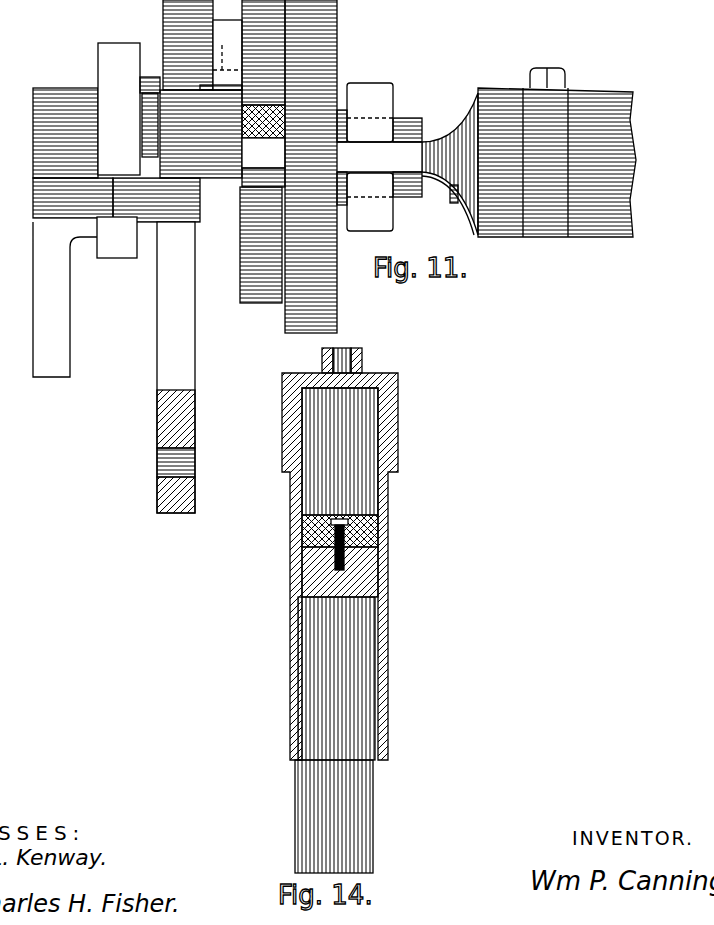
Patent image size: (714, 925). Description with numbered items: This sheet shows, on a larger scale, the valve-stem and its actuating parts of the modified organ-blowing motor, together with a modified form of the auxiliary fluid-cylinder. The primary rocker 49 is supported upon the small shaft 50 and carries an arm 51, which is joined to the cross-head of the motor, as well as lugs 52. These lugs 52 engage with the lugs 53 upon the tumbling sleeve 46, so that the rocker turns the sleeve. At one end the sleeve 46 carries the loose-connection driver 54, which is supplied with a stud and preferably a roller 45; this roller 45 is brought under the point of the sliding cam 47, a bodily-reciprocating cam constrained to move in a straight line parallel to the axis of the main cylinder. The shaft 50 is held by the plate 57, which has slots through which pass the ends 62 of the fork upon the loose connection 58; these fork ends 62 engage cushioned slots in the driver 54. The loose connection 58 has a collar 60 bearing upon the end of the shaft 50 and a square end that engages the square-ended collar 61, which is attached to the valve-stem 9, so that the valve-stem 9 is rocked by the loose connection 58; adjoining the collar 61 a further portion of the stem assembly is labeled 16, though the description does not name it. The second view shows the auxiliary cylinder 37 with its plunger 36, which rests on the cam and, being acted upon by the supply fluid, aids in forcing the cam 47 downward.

In FIG. 11, the valve-stem 9 is at (452, 200).
In FIG. 11, the cylinder 16 is at (598, 237).
In FIG. 14, the plunger 36 is at (373, 791).
In FIG. 14, the cylinder 37 is at (385, 573).
In FIG. 11, the roller 45 is at (188, 28).
In FIG. 11, the tumbling sleeve 46 is at (232, 212).
In FIG. 11, the sliding cam 47 is at (196, 410).
In FIG. 11, the primary rocker 49 is at (34, 96).
In FIG. 11, the small shaft 50 is at (413, 124).
In FIG. 11, the arm 51 is at (65, 299).
In FIG. 11, the lugs 52 is at (142, 248).
In FIG. 11, the lugs 53 is at (148, 73).
In FIG. 11, the loose-connection driver 54 is at (248, 305).
In FIG. 11, the plate 57 is at (337, 326).
In FIG. 11, the loose connection 58 is at (494, 243).
In FIG. 11, the collar 60 is at (394, 227).
In FIG. 11, the square-ended collar 61 is at (545, 238).
In FIG. 11, the fork ends 62 is at (263, 93).